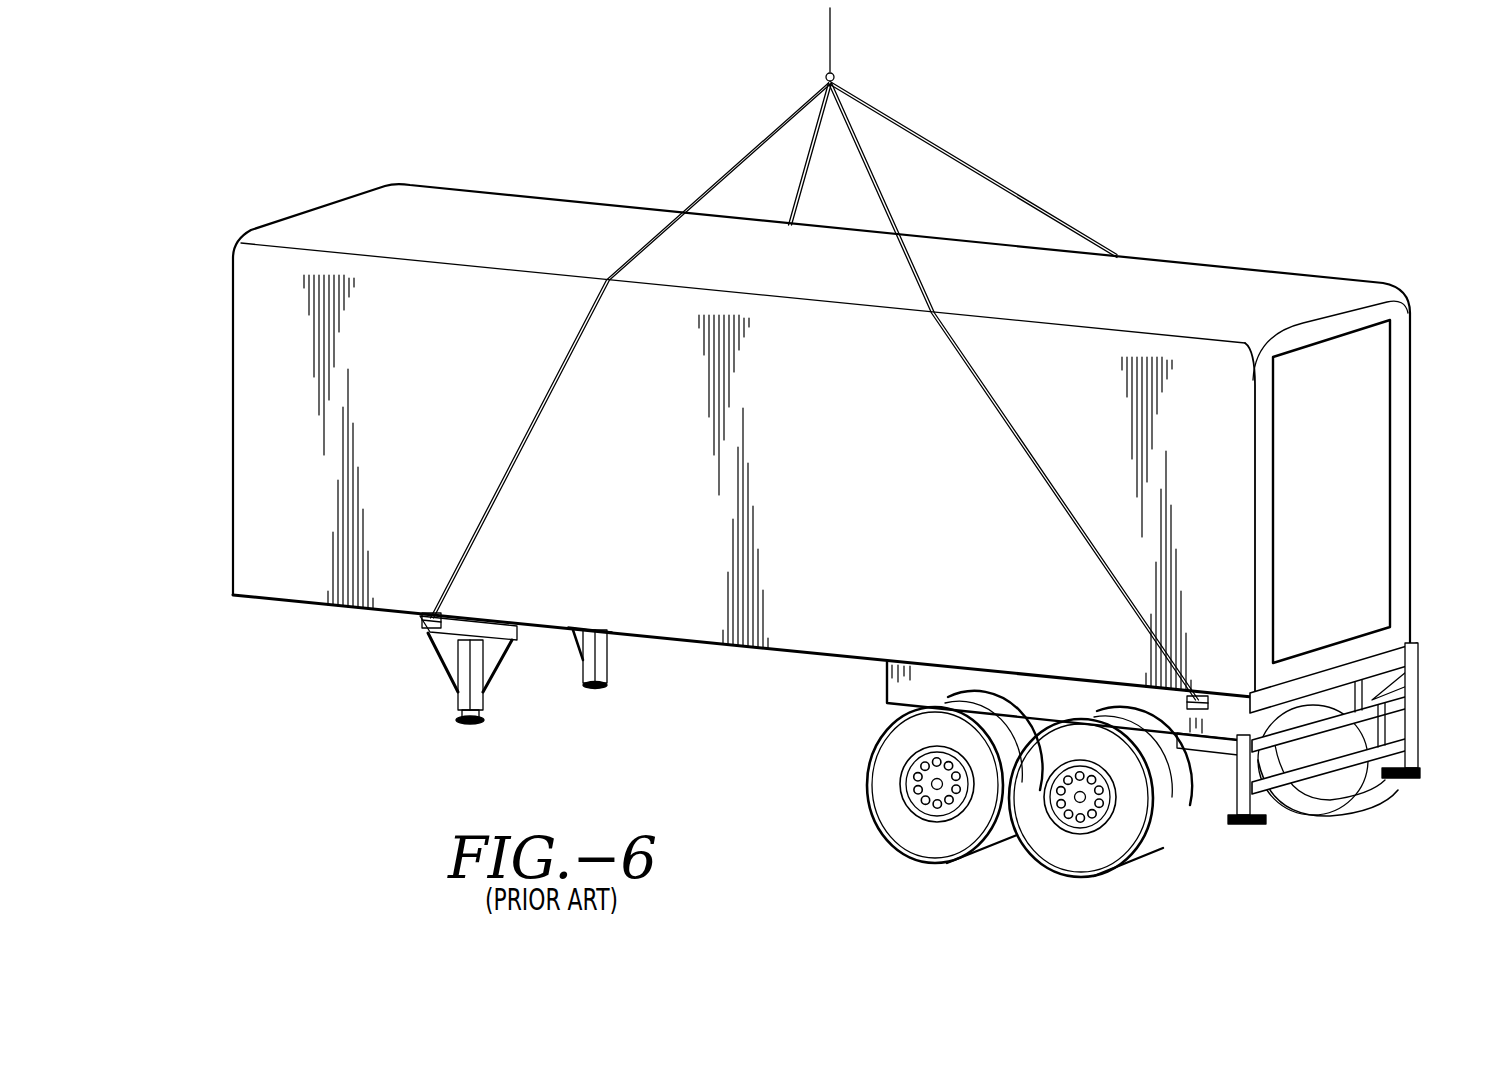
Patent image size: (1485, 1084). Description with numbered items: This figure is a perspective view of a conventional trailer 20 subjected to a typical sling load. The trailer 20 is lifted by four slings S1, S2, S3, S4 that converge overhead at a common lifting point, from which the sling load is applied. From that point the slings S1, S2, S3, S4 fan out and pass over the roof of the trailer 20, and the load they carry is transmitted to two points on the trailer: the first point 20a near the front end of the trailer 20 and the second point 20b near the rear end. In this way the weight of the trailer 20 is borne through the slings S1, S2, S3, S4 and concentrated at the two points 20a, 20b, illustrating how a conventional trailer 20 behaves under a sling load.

The trailer 20 is at (1352, 222).
The point on the trailer 20a is at (421, 624).
The point on the trailer 20b is at (1199, 696).
The sling S1 is at (740, 162).
The sling S2 is at (816, 129).
The sling S3 is at (858, 145).
The sling S4 is at (1010, 190).